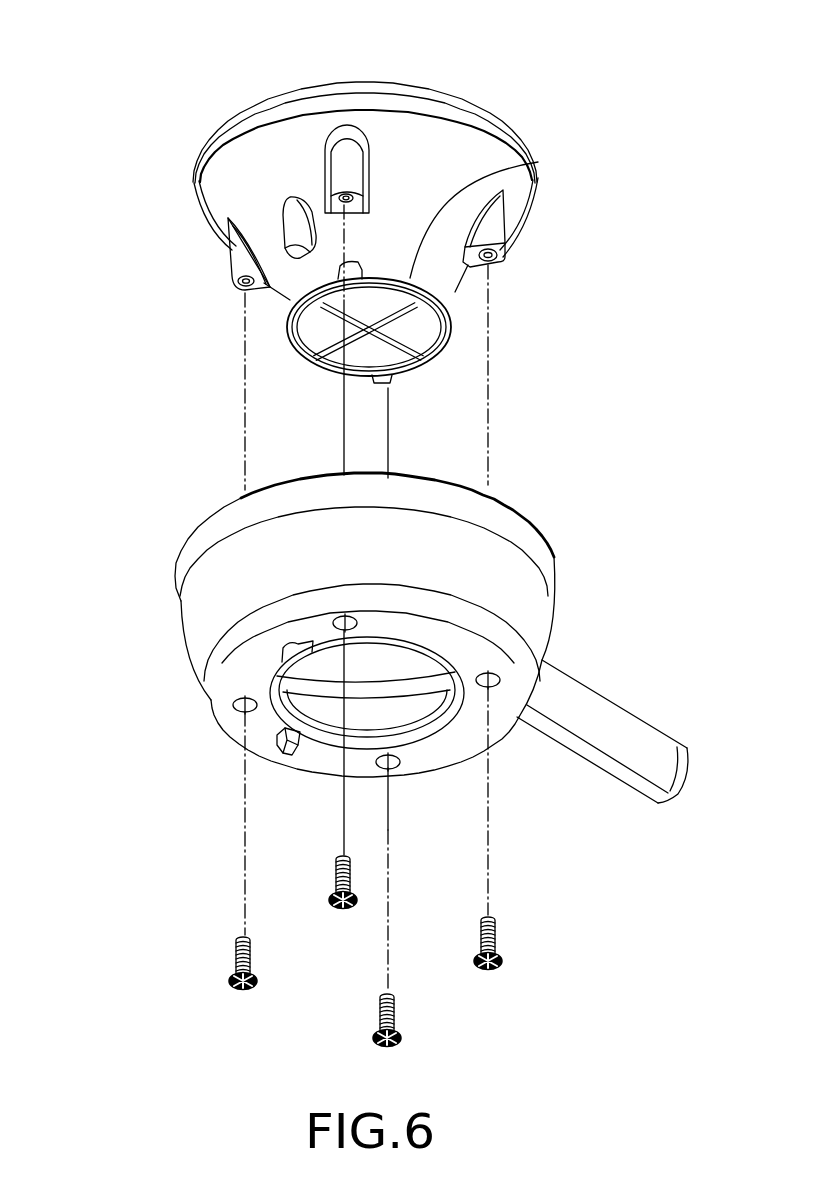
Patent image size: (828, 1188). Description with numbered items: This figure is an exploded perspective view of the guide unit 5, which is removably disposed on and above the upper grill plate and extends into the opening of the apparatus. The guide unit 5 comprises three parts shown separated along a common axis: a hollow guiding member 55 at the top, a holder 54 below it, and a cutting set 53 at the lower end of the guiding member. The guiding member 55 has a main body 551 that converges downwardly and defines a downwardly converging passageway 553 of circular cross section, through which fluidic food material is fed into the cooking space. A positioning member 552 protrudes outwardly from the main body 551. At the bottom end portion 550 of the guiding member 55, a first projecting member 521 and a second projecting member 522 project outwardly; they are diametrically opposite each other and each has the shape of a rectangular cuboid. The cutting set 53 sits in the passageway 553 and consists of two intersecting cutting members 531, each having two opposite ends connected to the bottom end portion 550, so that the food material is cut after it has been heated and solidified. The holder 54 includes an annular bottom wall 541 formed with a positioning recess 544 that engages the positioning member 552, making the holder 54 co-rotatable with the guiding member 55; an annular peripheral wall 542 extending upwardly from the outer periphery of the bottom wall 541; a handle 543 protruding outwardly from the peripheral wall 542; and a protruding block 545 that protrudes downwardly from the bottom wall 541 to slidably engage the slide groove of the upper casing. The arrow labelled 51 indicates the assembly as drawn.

The guide unit 5 is at (155, 619).
The mounting unit 51 is at (170, 572).
The cutting set 53 is at (324, 337).
The holder 54 is at (550, 557).
The guiding member 55 is at (381, 82).
The first projecting member 521 is at (393, 382).
The second projecting member 522 is at (350, 268).
The cutting member 531 is at (400, 345).
The annular bottom wall 541 is at (322, 762).
The annular peripheral wall 542 is at (238, 585).
The handle 543 is at (553, 693).
The positioning recess 544 is at (258, 634).
The protruding block 545 is at (292, 750).
The bottom end portion 550 is at (512, 167).
The main body 551 is at (422, 173).
The positioning member 552 is at (290, 200).
The passageway 553 is at (378, 307).